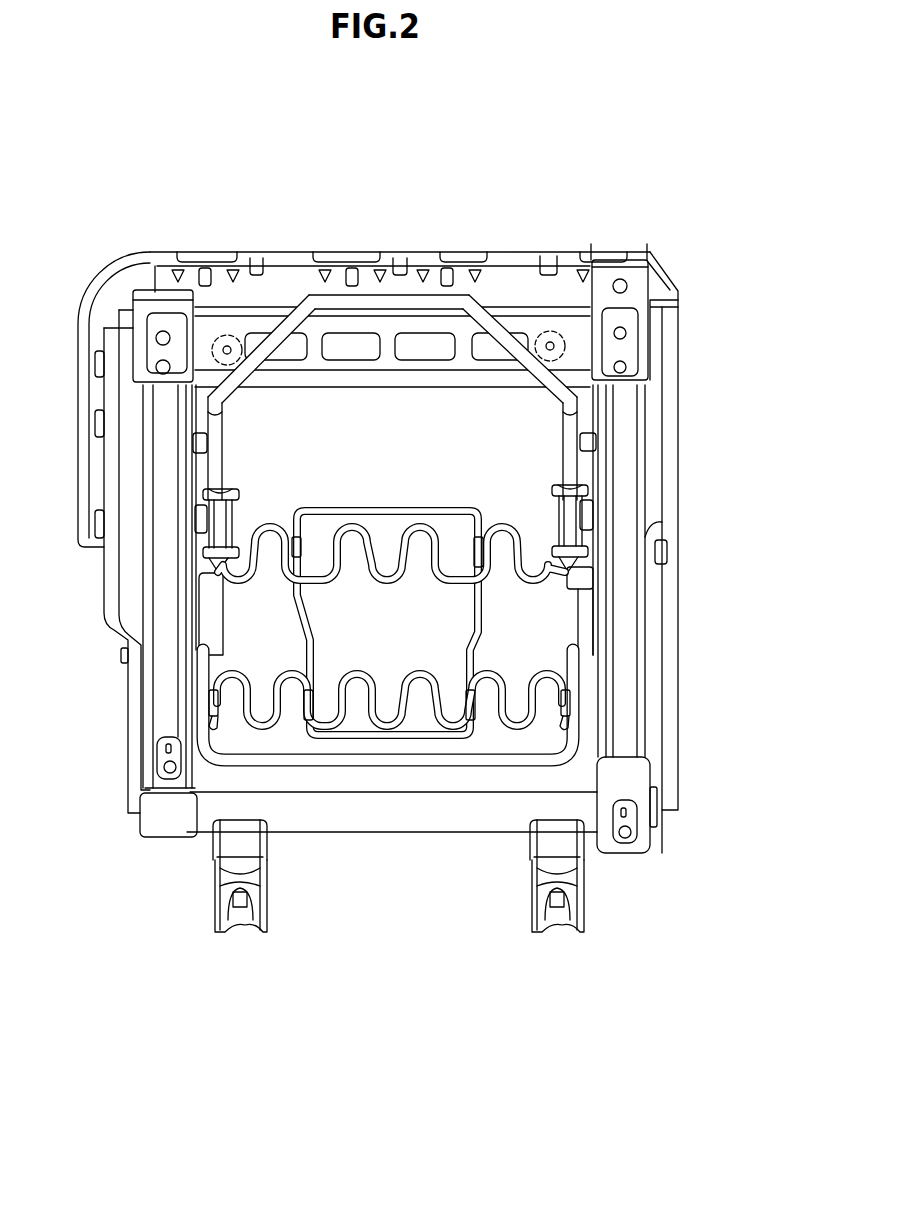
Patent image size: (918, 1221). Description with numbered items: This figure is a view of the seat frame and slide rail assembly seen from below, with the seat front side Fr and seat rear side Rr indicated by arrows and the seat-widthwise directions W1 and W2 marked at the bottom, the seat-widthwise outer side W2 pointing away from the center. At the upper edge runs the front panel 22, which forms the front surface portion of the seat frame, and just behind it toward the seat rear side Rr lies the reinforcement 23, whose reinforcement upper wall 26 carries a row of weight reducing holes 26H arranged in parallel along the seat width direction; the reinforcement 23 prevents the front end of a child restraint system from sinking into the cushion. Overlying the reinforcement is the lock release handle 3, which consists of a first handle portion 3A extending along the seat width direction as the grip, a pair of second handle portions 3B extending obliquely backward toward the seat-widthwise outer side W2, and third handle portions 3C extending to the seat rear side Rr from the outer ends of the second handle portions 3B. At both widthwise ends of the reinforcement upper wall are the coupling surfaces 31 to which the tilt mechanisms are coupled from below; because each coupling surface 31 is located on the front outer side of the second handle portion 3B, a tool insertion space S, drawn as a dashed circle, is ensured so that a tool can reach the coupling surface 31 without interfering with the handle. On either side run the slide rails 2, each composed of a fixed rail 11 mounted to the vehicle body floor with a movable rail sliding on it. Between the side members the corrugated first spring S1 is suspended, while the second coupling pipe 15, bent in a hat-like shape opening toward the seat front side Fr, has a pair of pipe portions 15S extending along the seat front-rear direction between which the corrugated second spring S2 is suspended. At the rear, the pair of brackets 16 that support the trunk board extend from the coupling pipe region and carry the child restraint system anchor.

The slide rail 2 is at (640, 502).
The lock release handle 3 is at (390, 414).
The first handle portion 3A is at (388, 303).
The second handle portion 3B is at (267, 353).
The third handle portion 3C is at (220, 463).
The fixed rail 11 is at (165, 597).
The second coupling pipe 15 is at (400, 766).
The pipe portions 15S is at (200, 717).
The bracket 16 is at (195, 908).
The front panel 22 is at (303, 247).
The reinforcement 23 is at (386, 402).
The reinforcement upper wall 26 is at (377, 308).
The weight reducing holes 26H is at (492, 356).
The coupling surface 31 is at (218, 333).
The tool insertion space S is at (232, 335).
The first spring S1 is at (351, 527).
The second spring S2 is at (387, 723).
The seat-widthwise inner side W1 is at (268, 1023).
The seat-widthwise outer side W2 is at (268, 1045).
The seat front side Fr is at (772, 440).
The seat rear side Rr is at (793, 440).